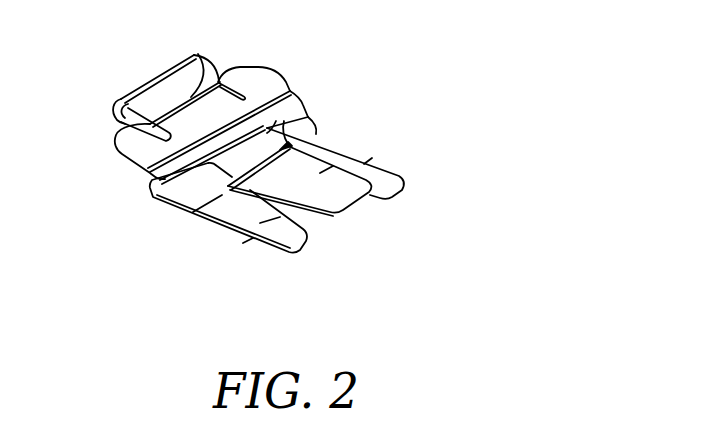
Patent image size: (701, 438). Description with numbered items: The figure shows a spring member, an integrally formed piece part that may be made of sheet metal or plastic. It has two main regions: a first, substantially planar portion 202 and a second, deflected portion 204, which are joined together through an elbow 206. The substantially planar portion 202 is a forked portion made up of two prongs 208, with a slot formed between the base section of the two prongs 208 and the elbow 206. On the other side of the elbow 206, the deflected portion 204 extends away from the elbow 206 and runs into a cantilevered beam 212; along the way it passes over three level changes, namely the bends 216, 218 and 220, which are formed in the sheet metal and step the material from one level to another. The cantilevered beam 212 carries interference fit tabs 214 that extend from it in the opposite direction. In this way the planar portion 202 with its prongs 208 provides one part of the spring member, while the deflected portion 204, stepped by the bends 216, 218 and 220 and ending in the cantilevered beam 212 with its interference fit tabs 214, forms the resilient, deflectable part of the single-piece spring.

The substantially planar portion 202 is at (228, 280).
The deflected portion 204 is at (338, 50).
The elbow 206 is at (152, 86).
The prongs 208 is at (392, 198).
The cantilevered beam 212 is at (340, 188).
The interference fit tabs 214 is at (240, 64).
The bend 216 is at (199, 56).
The bend 218 is at (286, 83).
The bend 220 is at (308, 122).